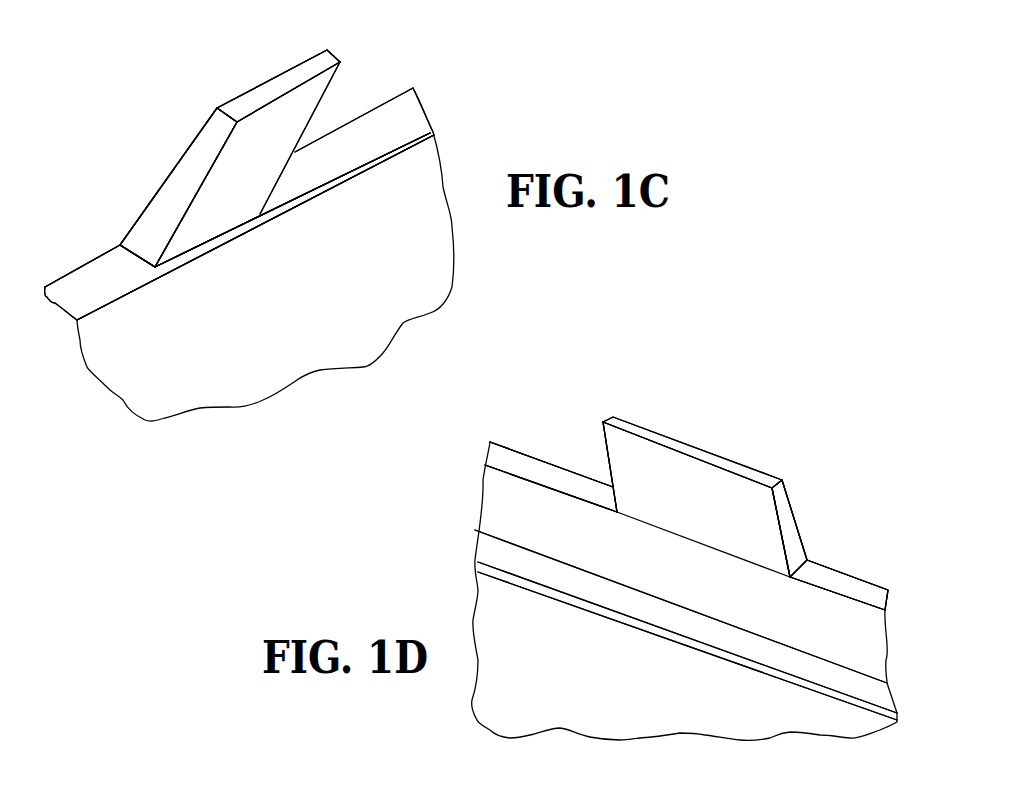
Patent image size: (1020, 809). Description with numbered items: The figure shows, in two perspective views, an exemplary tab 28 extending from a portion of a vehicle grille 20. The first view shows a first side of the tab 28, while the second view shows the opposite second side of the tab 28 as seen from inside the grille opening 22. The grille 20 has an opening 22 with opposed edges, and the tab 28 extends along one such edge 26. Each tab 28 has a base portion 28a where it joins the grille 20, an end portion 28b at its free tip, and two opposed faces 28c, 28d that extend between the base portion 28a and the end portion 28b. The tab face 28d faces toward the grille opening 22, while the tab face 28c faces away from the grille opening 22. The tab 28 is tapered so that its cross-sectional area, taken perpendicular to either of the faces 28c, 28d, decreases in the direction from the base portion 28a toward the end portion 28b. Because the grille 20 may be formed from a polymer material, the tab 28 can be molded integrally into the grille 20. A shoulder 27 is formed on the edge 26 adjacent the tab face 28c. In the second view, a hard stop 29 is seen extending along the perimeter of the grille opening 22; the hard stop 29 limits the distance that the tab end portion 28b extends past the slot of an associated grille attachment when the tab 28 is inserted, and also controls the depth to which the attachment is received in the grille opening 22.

In FIG. 1C, the vehicle grille 20 is at (412, 190).
In FIG. 1D, the vehicle grille 20 is at (553, 458).
In FIG. 1C, the grille opening 22 is at (98, 136).
In FIG. 1D, the grille opening 22 is at (511, 631).
In FIG. 1C, the edge of the grille opening 26 is at (80, 283).
In FIG. 1D, the edge of the grille opening 26 is at (842, 587).
In FIG. 1C, the shoulder 27 is at (203, 246).
In FIG. 1C, the tab 28 is at (327, 48).
In FIG. 1D, the tab 28 is at (712, 450).
In FIG. 1C, the base portion 28a is at (150, 240).
In FIG. 1C, the end portion 28b is at (265, 93).
In FIG. 1C, the tab face 28c is at (298, 148).
In FIG. 1D, the tab face 28c is at (797, 513).
In FIG. 1C, the tab face 28d is at (173, 167).
In FIG. 1D, the tab face 28d is at (658, 498).
In FIG. 1D, the hard stop 29 is at (688, 622).